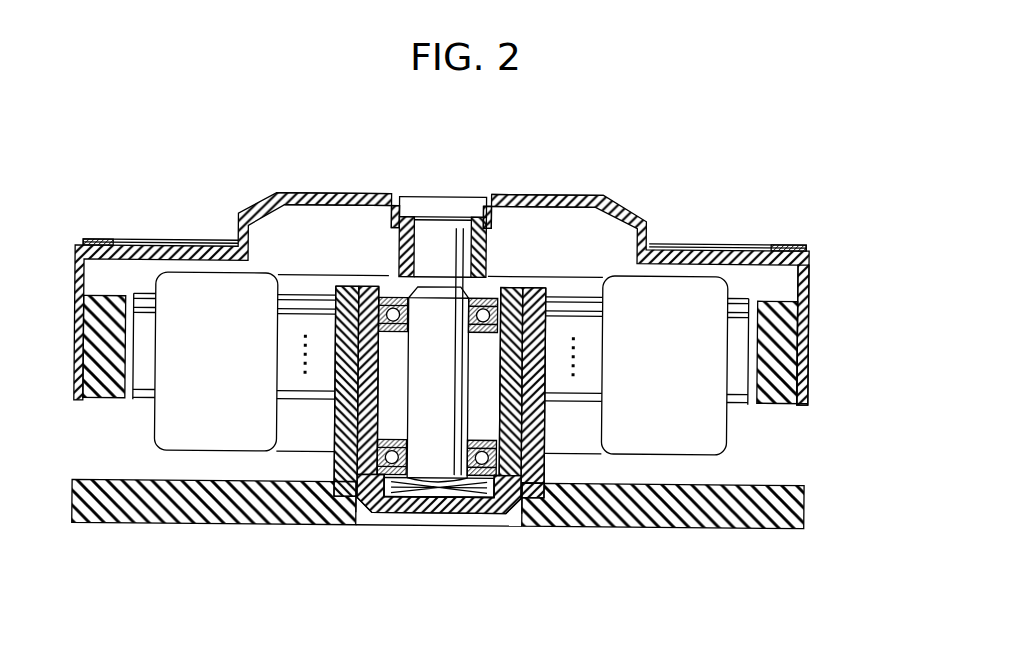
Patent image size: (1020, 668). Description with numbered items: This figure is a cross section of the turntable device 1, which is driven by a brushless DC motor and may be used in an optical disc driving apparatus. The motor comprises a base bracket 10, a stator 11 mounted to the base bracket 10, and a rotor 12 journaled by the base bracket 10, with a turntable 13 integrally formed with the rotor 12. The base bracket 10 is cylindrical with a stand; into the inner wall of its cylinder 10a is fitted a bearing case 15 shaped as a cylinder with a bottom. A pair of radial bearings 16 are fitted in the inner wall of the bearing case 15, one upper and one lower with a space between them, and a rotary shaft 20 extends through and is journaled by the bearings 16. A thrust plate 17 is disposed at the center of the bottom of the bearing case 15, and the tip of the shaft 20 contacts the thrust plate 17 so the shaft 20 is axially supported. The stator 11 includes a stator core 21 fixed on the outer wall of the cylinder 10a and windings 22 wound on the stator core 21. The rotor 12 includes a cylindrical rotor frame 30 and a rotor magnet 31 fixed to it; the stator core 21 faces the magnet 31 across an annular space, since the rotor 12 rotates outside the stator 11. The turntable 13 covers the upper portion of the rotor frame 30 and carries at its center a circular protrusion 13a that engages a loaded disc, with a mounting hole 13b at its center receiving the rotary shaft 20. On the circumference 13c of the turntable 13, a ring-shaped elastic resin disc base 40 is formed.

The turntable device 1 is at (717, 157).
The base bracket 10 is at (768, 477).
The cylinder 10a is at (537, 462).
The stator 11 is at (729, 425).
The rotor 12 is at (808, 349).
The turntable 13 is at (684, 240).
The circular protrusion 13a is at (572, 196).
The mounting hole 13b is at (429, 242).
The circumference 13c is at (820, 223).
The bearing case 15 is at (415, 500).
The radial bearings 16 is at (519, 286).
The thrust plate 17 is at (485, 500).
The rotary shaft 20 is at (460, 248).
The stator core 21 is at (588, 401).
The windings 22 is at (655, 453).
The rotor frame 30 is at (808, 309).
The rotor magnet 31 is at (787, 402).
The disc base 40 is at (783, 242).